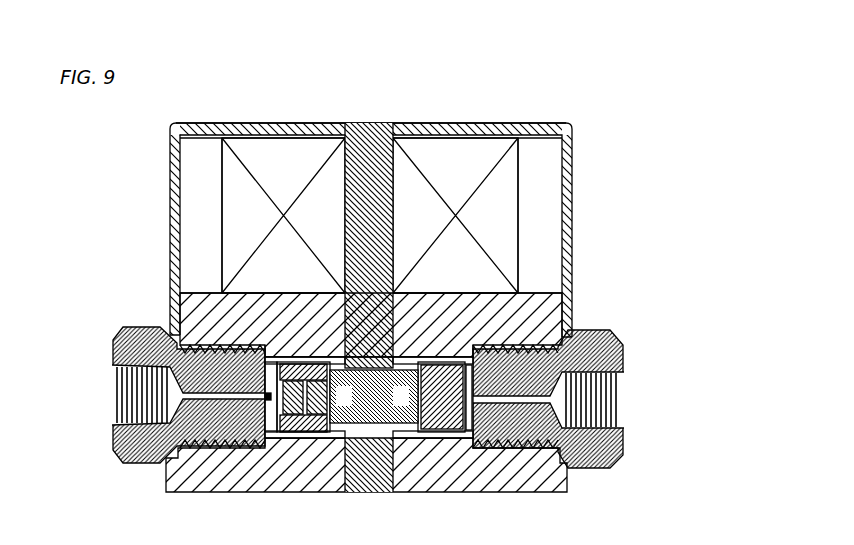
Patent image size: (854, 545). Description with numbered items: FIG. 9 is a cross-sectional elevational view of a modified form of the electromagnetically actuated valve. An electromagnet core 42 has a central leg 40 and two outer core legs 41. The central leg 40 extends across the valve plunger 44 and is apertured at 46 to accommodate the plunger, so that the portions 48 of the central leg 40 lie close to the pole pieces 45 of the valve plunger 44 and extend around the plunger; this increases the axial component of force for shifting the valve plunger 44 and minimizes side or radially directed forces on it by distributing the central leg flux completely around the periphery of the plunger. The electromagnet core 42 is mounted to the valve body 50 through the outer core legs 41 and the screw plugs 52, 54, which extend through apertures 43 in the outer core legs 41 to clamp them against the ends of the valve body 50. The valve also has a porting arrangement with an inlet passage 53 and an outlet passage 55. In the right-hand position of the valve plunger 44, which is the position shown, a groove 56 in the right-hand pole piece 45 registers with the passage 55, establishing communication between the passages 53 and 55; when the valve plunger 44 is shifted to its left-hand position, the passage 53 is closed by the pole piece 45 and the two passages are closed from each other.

The central leg 40 is at (379, 230).
The outer core legs 41 is at (175, 240).
The electromagnet core 42 is at (458, 126).
The apertures 43 is at (162, 328).
The valve plunger 44 is at (447, 377).
The pole pieces 45 is at (312, 347).
The aperture 46 is at (358, 426).
The portions of the central core leg 48 is at (348, 362).
The valve body 50 is at (200, 494).
The screw plug 52 is at (122, 333).
The inlet passage 53 is at (205, 395).
The screw plug 54 is at (610, 336).
The outlet passage 55 is at (507, 392).
The groove 56 is at (476, 382).